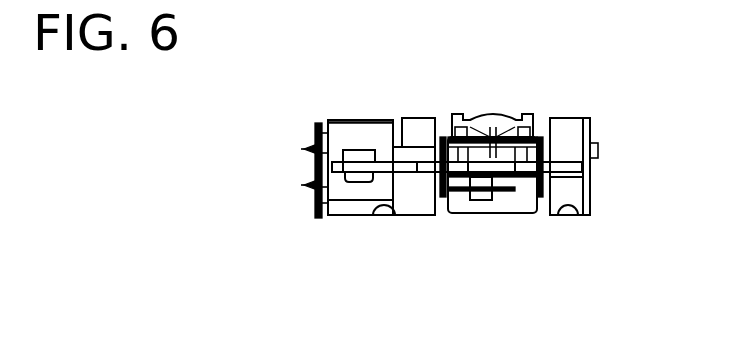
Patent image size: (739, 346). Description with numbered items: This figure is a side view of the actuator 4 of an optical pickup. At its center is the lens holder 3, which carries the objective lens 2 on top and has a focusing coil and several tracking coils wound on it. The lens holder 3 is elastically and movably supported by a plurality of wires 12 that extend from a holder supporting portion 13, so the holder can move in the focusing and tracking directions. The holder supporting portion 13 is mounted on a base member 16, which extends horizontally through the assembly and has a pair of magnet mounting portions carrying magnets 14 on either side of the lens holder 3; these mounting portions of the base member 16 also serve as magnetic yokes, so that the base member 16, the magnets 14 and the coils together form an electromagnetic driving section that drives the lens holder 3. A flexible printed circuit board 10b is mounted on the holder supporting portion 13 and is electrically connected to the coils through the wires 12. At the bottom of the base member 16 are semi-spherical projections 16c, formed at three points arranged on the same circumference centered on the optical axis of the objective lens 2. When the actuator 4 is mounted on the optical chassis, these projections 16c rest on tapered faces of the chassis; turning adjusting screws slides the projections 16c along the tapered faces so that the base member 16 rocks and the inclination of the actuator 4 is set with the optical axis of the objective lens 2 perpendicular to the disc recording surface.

The objective lens 2 is at (494, 125).
The lens holder 3 is at (507, 208).
The actuator 4 is at (612, 119).
The flexible printed circuit board 10b is at (315, 135).
The wires 12 is at (462, 205).
The holder supporting portion 13 is at (365, 135).
The magnets 14 is at (418, 120).
The base member 16 is at (583, 169).
The semi-spherical projections 16c is at (385, 226).